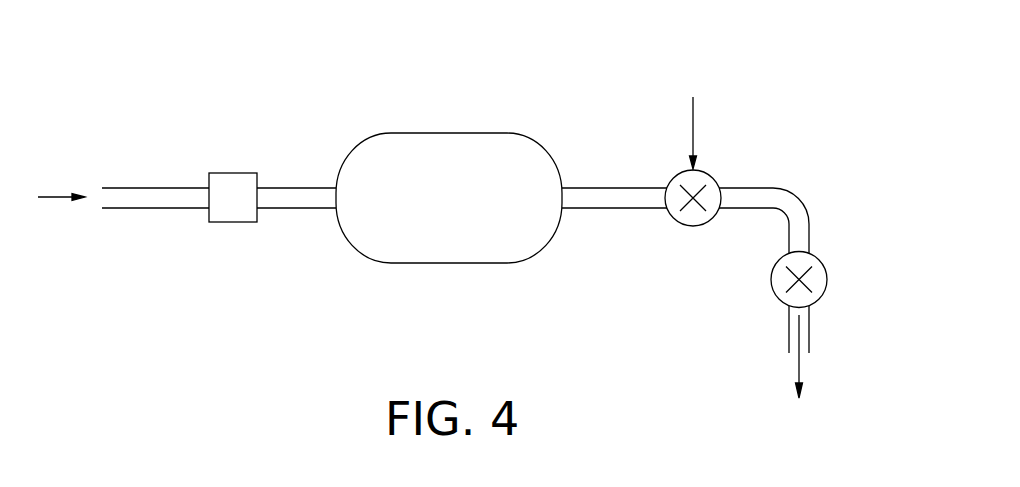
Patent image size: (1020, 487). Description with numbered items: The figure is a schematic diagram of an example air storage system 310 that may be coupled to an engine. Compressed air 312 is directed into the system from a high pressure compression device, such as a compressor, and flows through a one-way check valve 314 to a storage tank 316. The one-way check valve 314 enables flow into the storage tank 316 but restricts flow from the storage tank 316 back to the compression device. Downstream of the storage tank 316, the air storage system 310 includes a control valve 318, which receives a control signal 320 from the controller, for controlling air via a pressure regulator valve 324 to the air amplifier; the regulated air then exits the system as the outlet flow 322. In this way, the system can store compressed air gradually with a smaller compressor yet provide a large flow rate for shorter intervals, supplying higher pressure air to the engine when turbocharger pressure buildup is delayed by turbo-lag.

The air storage system 310 is at (204, 106).
The compressed air 312 is at (48, 198).
The one-way check valve 314 is at (233, 173).
The storage tank 316 is at (449, 198).
The control valve 318 is at (710, 172).
The control signal 320 is at (697, 117).
The outlet flow 322 is at (799, 358).
The pressure regulator valve 324 is at (817, 255).